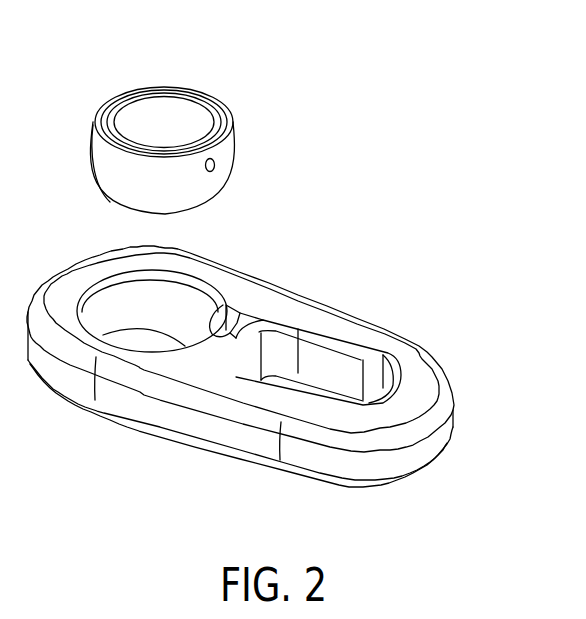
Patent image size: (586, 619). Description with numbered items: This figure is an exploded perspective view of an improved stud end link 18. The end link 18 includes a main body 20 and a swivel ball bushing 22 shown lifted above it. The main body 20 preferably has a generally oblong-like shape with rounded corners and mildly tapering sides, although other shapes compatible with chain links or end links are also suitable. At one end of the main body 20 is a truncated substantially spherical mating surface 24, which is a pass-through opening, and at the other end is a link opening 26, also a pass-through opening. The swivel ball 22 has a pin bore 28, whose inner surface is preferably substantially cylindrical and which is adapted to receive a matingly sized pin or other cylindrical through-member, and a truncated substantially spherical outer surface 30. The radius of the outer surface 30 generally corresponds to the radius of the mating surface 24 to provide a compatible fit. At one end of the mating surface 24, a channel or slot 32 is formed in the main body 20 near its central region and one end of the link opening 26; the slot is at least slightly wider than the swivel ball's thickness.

The stud end link 18 is at (272, 376).
The main body 20 is at (173, 422).
The swivel ball bushing 22 is at (162, 124).
The truncated substantially spherical mating surface 24 is at (105, 309).
The link opening 26 is at (327, 367).
The pin bore 28 is at (148, 105).
The truncated substantially spherical outer surface 30 is at (96, 156).
The slot 32 is at (223, 303).